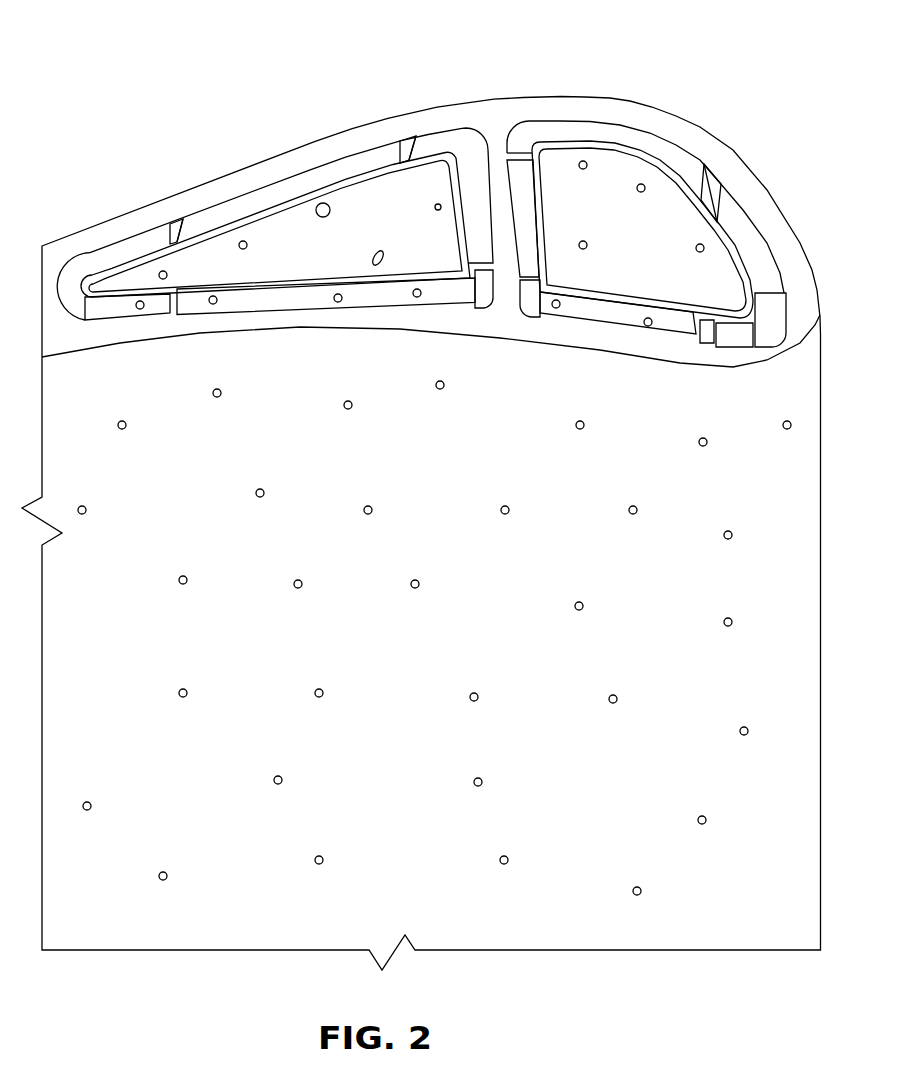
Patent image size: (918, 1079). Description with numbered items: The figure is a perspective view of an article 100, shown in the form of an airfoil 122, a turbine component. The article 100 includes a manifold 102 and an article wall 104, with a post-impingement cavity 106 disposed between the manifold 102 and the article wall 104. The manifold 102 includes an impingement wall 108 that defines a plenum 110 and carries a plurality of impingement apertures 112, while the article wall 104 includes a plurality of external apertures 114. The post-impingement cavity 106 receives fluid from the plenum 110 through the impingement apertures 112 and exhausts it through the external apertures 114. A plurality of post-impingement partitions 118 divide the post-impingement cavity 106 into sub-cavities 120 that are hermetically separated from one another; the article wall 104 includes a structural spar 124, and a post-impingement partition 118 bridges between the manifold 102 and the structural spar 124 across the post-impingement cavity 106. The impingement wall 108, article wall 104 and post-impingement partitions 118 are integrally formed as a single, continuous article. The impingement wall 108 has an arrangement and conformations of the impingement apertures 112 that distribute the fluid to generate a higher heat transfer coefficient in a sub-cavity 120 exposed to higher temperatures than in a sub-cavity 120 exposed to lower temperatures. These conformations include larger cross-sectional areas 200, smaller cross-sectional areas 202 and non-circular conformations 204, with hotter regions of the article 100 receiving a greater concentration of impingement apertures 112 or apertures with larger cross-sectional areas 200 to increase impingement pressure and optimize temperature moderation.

The article 100 is at (263, 93).
The manifold 102 is at (437, 150).
The article wall 104 is at (207, 182).
The post-impingement cavity 106 is at (103, 311).
The impingement wall 108 is at (398, 158).
The plenum 110 is at (273, 247).
The impingement apertures 112 is at (648, 318).
The external apertures 114 is at (82, 508).
The post-impingement partitions 118 is at (95, 318).
The sub-cavities 120 is at (72, 287).
The airfoil 122 is at (115, 95).
The structural spar 124 is at (498, 213).
The larger cross-sectional areas 200 is at (323, 203).
The smaller cross-sectional areas 202 is at (437, 204).
The non-circular conformations 204 is at (383, 250).